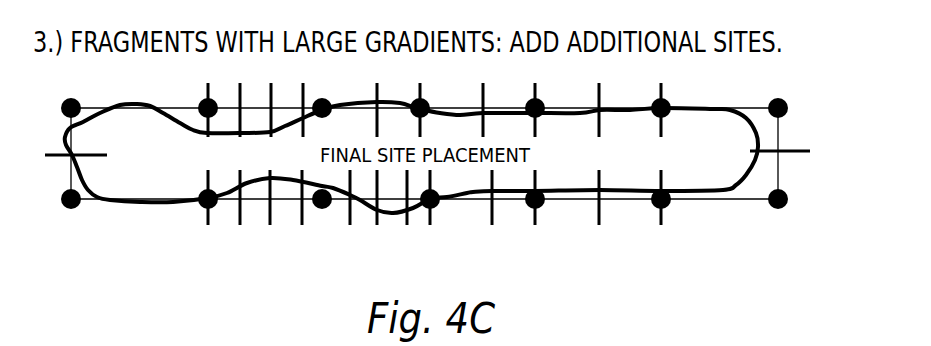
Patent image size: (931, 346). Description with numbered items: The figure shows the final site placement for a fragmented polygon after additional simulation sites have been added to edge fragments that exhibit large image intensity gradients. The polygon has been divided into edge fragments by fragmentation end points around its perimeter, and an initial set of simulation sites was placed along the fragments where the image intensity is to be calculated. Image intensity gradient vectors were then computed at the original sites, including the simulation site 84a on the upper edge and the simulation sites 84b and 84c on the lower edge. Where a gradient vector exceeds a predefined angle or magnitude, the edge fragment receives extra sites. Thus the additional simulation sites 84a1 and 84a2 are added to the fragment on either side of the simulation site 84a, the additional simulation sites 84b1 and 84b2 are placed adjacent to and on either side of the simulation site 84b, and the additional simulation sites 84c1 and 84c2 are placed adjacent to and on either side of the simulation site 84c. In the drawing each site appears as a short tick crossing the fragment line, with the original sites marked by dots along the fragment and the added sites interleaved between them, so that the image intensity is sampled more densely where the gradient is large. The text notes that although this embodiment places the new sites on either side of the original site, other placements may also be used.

The additional simulation site 84a2 is at (238, 98).
The simulation site 84a is at (272, 96).
The additional simulation site 84a1 is at (306, 93).
The additional simulation site 84b1 is at (238, 211).
The simulation site 84b is at (270, 213).
The additional simulation site 84b2 is at (302, 213).
The additional simulation site 84c1 is at (350, 210).
The simulation site 84c is at (376, 215).
The additional simulation site 84c2 is at (407, 220).